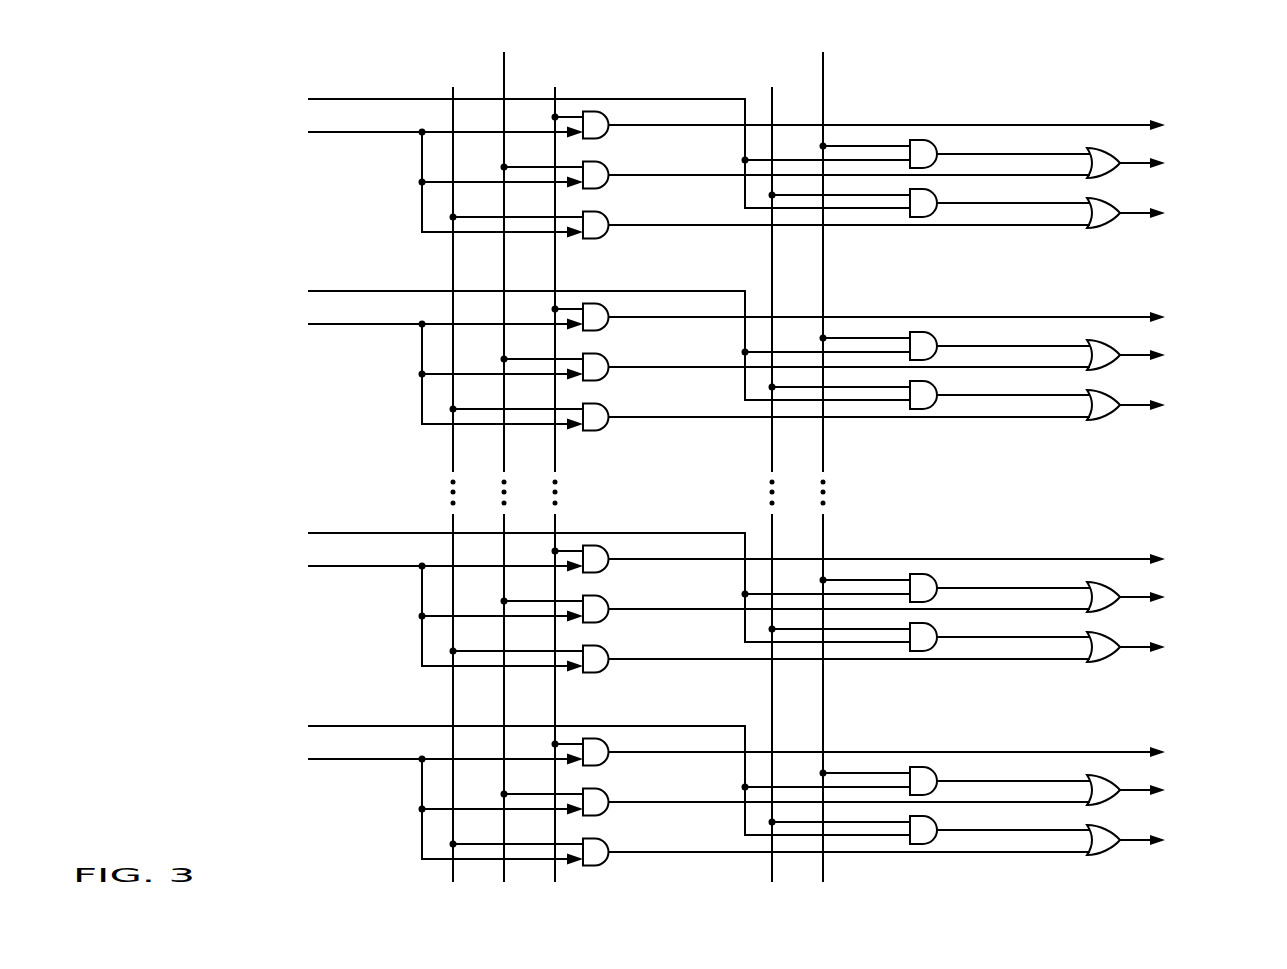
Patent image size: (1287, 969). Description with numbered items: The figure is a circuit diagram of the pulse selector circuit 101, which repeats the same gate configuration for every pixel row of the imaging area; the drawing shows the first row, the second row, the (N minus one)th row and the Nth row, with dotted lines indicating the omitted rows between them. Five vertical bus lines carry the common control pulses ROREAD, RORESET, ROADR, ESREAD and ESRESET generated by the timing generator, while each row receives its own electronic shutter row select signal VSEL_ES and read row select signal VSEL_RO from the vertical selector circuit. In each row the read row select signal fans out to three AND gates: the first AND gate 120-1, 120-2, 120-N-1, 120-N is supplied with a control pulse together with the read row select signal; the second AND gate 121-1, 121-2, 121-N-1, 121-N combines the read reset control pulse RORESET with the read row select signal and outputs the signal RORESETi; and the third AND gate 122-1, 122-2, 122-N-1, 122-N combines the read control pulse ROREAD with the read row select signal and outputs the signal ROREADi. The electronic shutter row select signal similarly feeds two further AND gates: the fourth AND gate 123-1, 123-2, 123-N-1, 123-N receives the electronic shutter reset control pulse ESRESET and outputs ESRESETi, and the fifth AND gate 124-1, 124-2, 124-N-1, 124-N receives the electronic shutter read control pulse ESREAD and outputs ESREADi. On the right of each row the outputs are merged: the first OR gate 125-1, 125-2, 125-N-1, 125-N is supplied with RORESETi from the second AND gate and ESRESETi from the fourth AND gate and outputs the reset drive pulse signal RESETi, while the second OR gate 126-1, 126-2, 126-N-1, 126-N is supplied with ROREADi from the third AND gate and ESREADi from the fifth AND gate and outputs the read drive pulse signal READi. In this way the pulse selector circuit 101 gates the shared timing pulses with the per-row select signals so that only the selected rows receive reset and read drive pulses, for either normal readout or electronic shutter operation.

The pulse selector circuit 101 is at (193, 60).
The first AND gate 120-1 is at (602, 111).
The second AND gate 121-1 is at (587, 161).
The third AND gate 122-1 is at (602, 238).
The fourth AND gate 123-1 is at (920, 140).
The fifth AND gate 124-1 is at (920, 217).
The first OR gate 125-1 is at (1107, 148).
The second OR gate 126-1 is at (1107, 228).
The first AND gate 120-2 is at (631, 297).
The second AND gate 121-2 is at (635, 349).
The third AND gate 122-2 is at (631, 428).
The fourth AND gate 123-2 is at (921, 319).
The fifth AND gate 124-2 is at (921, 418).
The first OR gate 125-2 is at (1096, 327).
The second OR gate 126-2 is at (1132, 418).
The first AND gate 120-N-1 is at (651, 539).
The second AND gate 121-N-1 is at (655, 591).
The third AND gate 122-N-1 is at (651, 670).
The fourth AND gate 123-N-1 is at (921, 561).
The fifth AND gate 124-N-1 is at (921, 660).
The first OR gate 125-N-1 is at (1095, 569).
The second OR gate 126-N-1 is at (1152, 660).
The first AND gate 120-N is at (635, 732).
The second AND gate 121-N is at (639, 784).
The third AND gate 122-N is at (635, 863).
The fourth AND gate 123-N is at (924, 754).
The fifth AND gate 124-N is at (924, 853).
The first OR gate 125-N is at (1096, 762).
The second OR gate 126-N is at (1135, 853).